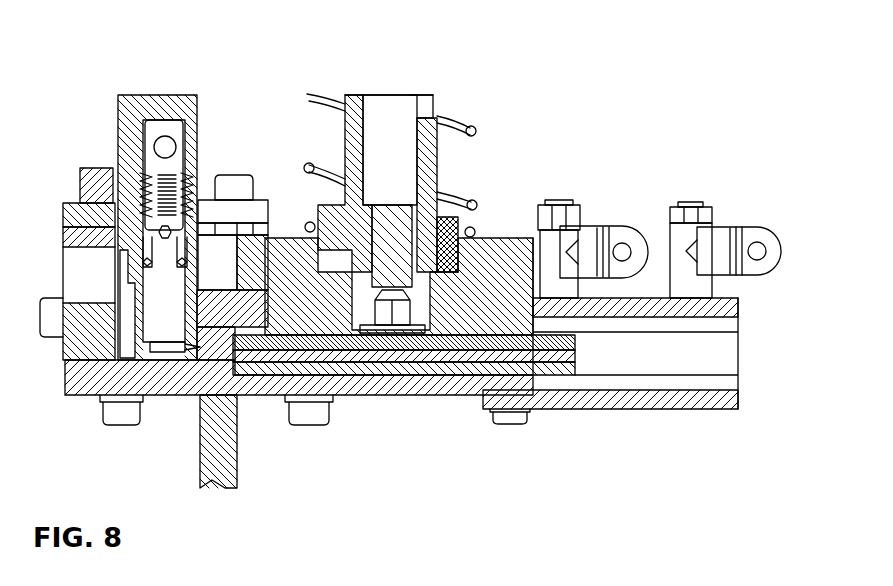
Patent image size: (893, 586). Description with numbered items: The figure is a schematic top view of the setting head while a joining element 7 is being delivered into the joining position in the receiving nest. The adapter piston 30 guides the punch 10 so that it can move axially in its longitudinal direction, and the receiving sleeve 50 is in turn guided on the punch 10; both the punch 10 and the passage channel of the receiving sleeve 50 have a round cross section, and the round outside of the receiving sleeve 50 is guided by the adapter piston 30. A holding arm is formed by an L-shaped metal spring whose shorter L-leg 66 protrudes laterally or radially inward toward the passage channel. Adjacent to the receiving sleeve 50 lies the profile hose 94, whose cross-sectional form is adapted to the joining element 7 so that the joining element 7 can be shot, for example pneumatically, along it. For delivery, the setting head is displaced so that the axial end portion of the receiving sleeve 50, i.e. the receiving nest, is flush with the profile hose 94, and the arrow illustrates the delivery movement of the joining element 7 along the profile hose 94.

The adapter piston 30 is at (155, 97).
The receiving sleeve 50 is at (130, 237).
The punch 10 is at (170, 177).
The shorter L-leg 66 is at (165, 360).
The joining element 7 is at (193, 347).
The profile hose 94 is at (468, 350).